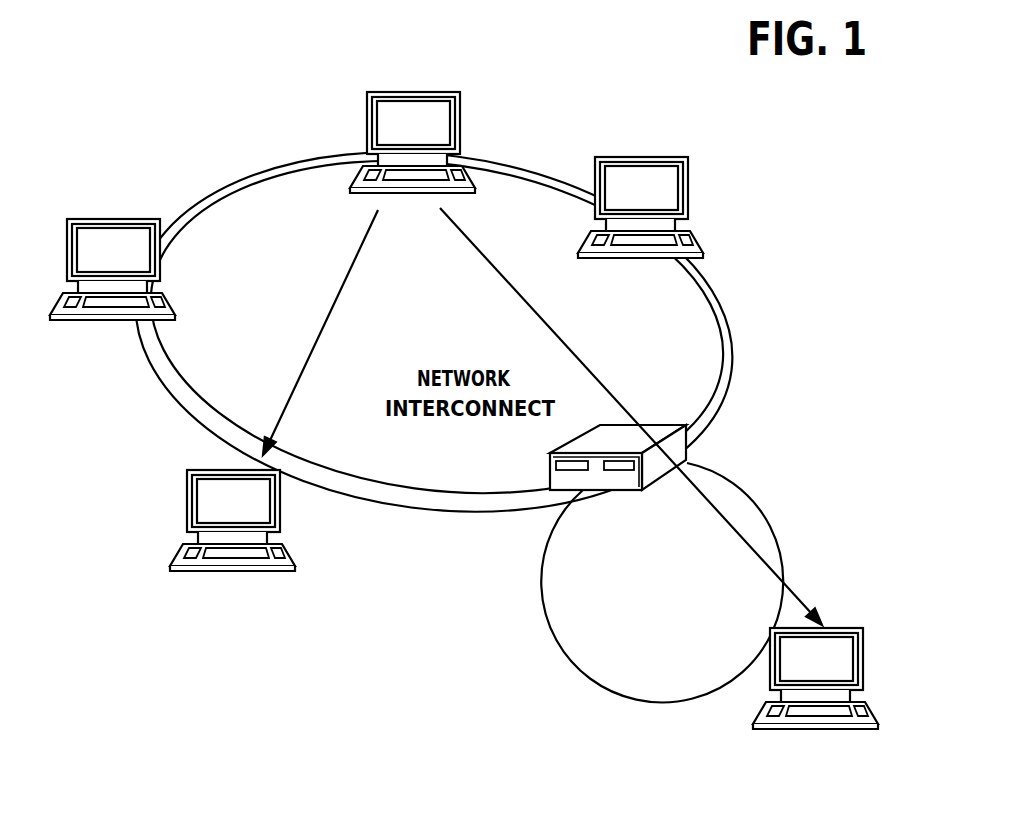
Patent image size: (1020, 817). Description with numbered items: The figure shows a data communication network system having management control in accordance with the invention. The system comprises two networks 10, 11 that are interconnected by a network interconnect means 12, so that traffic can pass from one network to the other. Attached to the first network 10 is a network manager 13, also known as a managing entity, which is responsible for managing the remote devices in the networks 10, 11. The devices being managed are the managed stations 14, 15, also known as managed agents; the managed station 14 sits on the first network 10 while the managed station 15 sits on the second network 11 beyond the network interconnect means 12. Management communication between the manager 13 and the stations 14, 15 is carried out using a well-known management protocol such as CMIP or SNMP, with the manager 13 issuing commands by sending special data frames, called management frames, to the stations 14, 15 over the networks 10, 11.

The network 10 is at (745, 301).
The network 11 is at (768, 503).
The network interconnect means 12 is at (690, 446).
The network manager 13 is at (442, 93).
The managed station 14 is at (187, 505).
The managed station 15 is at (841, 628).